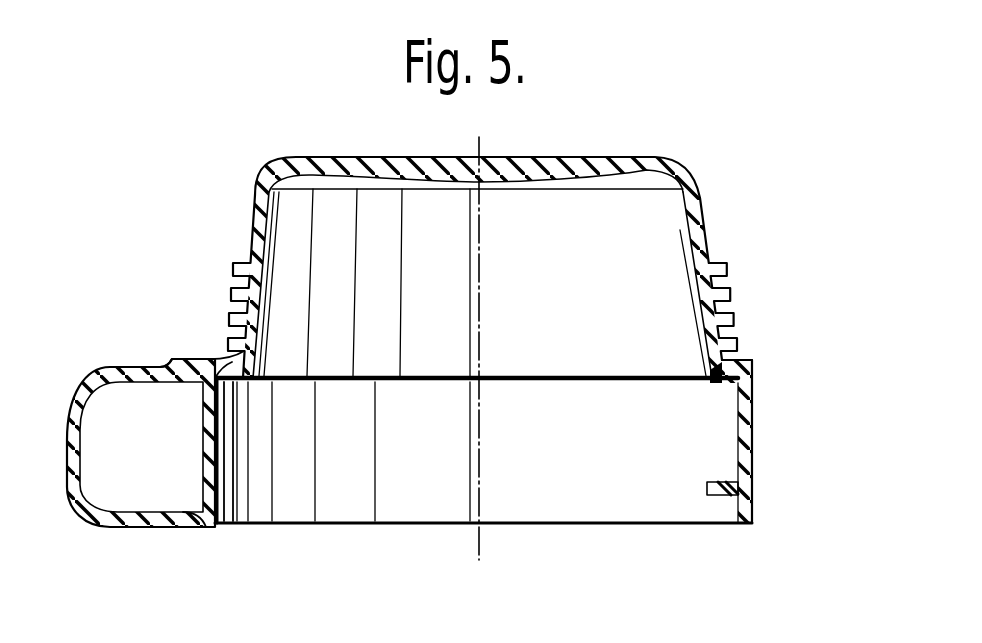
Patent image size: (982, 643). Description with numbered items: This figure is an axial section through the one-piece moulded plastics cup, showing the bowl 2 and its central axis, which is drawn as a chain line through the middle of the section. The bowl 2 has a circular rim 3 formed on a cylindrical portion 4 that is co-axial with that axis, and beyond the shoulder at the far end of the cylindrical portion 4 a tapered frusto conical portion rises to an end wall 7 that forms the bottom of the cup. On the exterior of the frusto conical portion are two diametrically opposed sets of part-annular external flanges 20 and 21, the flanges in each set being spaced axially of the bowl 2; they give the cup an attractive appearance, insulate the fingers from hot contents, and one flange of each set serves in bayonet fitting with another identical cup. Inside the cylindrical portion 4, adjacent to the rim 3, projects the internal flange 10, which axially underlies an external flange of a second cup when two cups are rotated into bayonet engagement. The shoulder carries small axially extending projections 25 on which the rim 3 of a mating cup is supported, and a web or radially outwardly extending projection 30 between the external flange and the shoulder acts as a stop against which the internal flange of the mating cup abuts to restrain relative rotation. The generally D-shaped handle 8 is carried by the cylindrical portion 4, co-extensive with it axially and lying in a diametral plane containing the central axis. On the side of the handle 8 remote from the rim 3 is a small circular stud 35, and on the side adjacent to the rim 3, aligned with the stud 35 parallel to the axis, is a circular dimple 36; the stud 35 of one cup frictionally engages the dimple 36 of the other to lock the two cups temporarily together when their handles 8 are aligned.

The end wall 7 is at (500, 172).
The external flanges 21 is at (220, 235).
The external flanges 20 is at (746, 254).
The projections 25 is at (742, 362).
The cylindrical portion 4 is at (755, 442).
The internal flange 10 is at (722, 480).
The rim 3 is at (607, 527).
The bowl 2 is at (481, 350).
The handle 8 is at (107, 377).
The stud 35 is at (183, 360).
The projection 30 is at (220, 360).
The dimple 36 is at (198, 527).